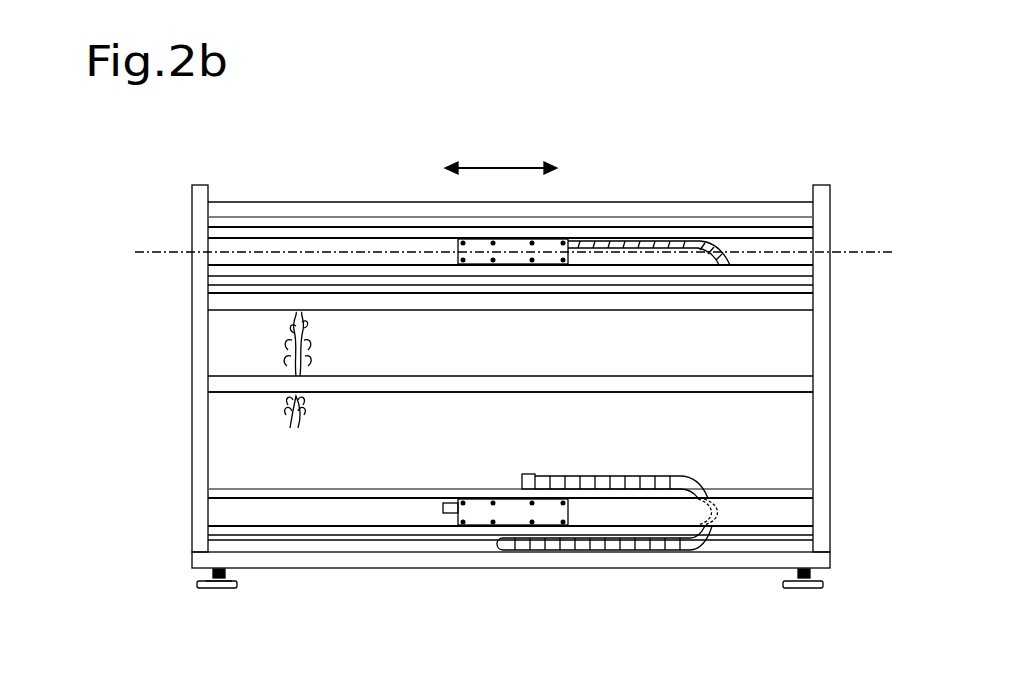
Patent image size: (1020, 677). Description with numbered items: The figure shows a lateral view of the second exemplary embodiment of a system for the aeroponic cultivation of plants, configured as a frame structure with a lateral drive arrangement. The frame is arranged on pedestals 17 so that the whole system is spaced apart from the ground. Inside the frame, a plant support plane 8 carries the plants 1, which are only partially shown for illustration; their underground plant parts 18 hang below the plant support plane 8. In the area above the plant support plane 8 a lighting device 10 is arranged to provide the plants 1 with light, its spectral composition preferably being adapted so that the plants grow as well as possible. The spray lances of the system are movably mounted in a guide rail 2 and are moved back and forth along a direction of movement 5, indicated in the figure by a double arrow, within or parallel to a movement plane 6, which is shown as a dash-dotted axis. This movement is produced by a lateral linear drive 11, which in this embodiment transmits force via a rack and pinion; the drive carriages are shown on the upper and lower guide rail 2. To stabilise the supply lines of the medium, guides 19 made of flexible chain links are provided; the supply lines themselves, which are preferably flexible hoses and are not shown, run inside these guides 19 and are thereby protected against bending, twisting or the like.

The plant 1 is at (288, 330).
The guide rail 2 is at (230, 233).
The direction of movement 5 is at (482, 167).
The movement plane 6 is at (845, 252).
The plant support plane 8 is at (799, 383).
The lighting device 10 is at (780, 226).
The linear drive 11 is at (572, 240).
The pedestal 17 is at (210, 588).
The underground plant parts 18 is at (290, 428).
The guide 19 is at (612, 556).